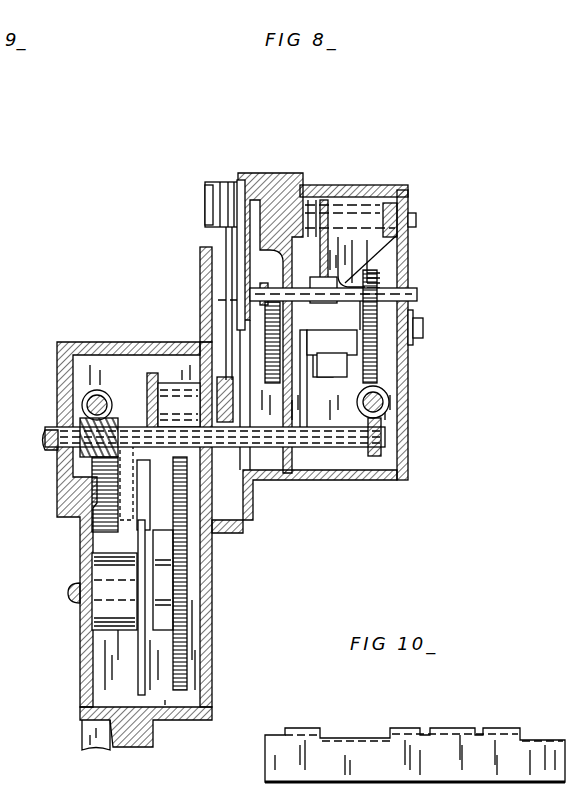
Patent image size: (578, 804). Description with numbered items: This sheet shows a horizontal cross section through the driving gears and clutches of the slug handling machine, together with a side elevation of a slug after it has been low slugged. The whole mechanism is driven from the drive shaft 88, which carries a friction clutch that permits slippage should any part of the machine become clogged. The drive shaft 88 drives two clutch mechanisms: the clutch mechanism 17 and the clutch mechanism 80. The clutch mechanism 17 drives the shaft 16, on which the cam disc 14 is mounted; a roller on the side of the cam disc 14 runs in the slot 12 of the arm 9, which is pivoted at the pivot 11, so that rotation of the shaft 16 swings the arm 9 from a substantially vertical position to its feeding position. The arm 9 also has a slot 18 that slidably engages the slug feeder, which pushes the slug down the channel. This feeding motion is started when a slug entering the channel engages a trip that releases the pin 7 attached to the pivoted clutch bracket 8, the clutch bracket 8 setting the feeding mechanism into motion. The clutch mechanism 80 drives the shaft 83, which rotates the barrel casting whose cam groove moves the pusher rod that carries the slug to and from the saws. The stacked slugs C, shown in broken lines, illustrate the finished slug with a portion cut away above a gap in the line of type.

In FIG. 8, the pin 7 is at (408, 278).
In FIG. 8, the clutch bracket 8 is at (398, 236).
In FIG. 8, the arm 9 is at (217, 233).
In FIG. 8, the pivot 11 is at (217, 198).
In FIG. 8, the slot 12 is at (232, 302).
In FIG. 8, the cam disc 14 is at (235, 242).
In FIG. 8, the shaft 16 is at (423, 325).
In FIG. 8, the clutch mechanism 17 is at (340, 375).
In FIG. 8, the slot 18 is at (238, 422).
In FIG. 8, the clutch mechanism 80 is at (119, 528).
In FIG. 8, the shaft 83 is at (72, 600).
In FIG. 8, the drive shaft 88 is at (52, 440).
In FIG. 10, the stacked slugs C is at (491, 742).